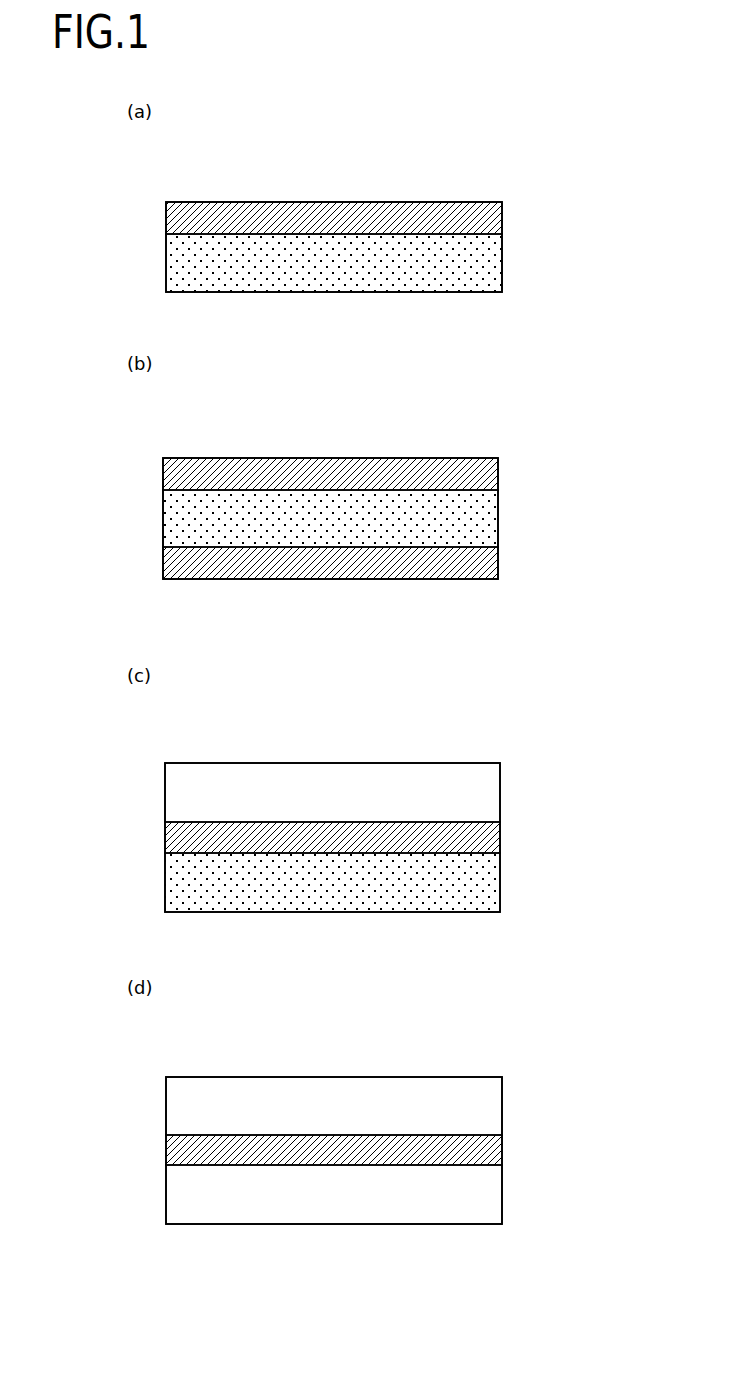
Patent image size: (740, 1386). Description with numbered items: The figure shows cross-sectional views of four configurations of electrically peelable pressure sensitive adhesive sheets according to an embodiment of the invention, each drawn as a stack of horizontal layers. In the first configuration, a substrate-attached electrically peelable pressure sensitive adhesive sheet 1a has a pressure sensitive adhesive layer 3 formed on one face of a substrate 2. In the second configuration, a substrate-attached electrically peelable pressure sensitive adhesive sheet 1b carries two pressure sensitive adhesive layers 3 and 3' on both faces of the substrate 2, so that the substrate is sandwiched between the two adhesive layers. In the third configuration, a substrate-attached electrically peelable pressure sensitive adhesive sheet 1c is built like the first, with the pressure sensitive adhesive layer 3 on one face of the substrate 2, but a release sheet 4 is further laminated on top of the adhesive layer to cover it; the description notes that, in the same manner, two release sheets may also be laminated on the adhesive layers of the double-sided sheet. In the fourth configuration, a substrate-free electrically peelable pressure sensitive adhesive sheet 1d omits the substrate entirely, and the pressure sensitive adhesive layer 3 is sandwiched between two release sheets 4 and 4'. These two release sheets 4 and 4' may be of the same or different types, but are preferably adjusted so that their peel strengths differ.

The substrate-attached electrically peelable pressure sensitive adhesive sheet 1a is at (486, 154).
The substrate-attached electrically peelable pressure sensitive adhesive sheet 1b is at (483, 414).
The substrate-attached electrically peelable pressure sensitive adhesive sheet 1c is at (483, 725).
The substrate-free electrically peelable pressure sensitive adhesive sheet 1d is at (485, 1038).
The substrate 2 is at (483, 272).
The pressure sensitive adhesive layer 3 is at (398, 681).
The pressure sensitive adhesive layer 3' is at (400, 561).
The release sheet 4 is at (399, 949).
The release sheet 4' is at (403, 1194).